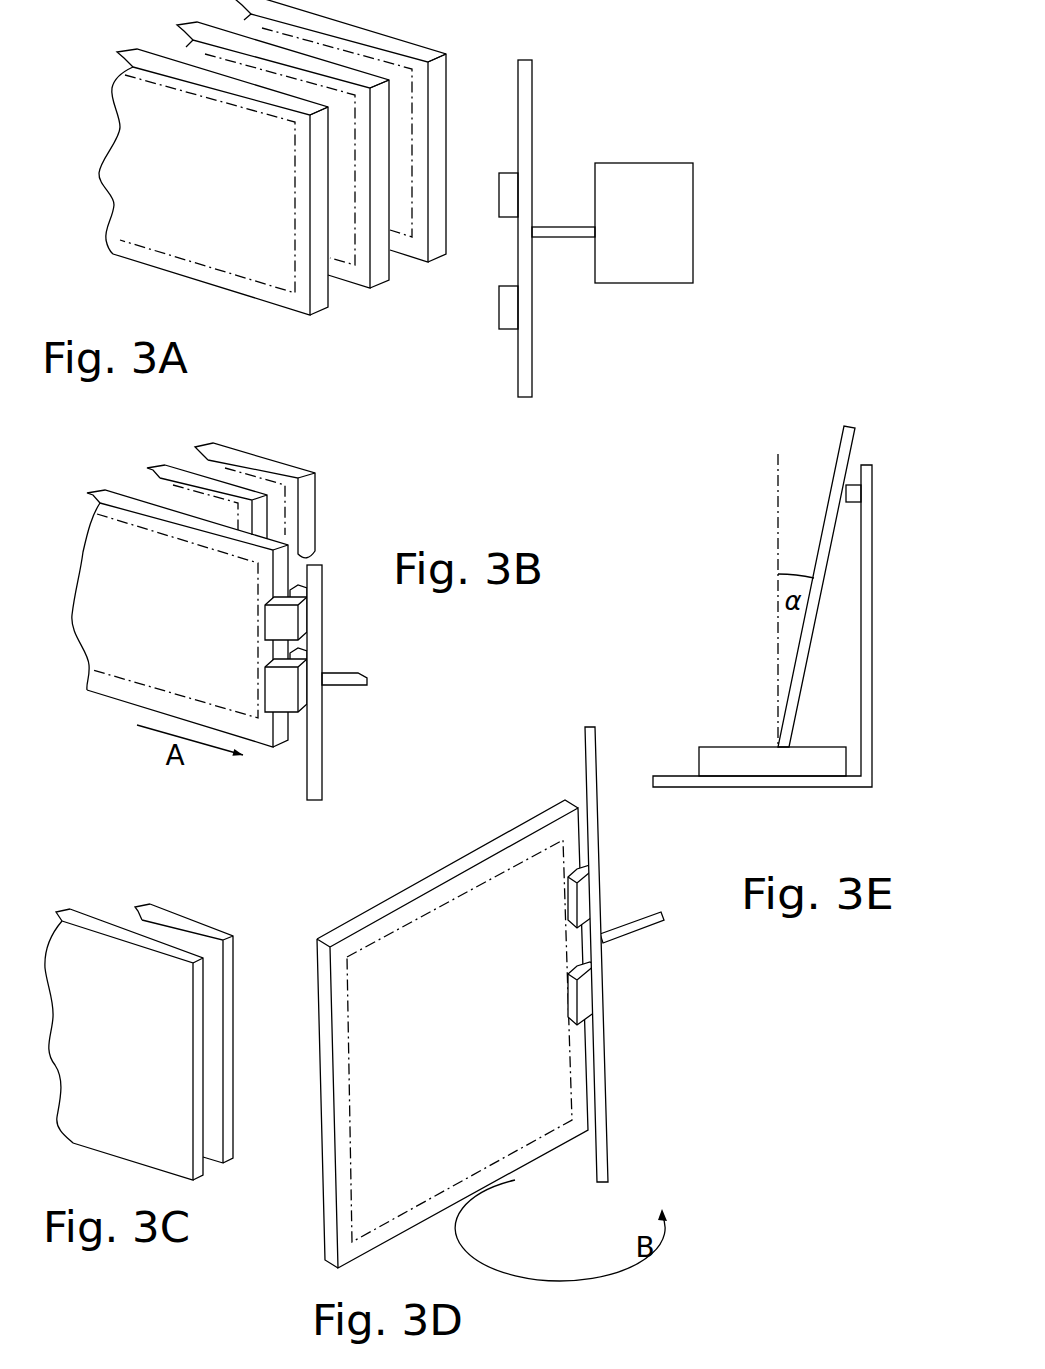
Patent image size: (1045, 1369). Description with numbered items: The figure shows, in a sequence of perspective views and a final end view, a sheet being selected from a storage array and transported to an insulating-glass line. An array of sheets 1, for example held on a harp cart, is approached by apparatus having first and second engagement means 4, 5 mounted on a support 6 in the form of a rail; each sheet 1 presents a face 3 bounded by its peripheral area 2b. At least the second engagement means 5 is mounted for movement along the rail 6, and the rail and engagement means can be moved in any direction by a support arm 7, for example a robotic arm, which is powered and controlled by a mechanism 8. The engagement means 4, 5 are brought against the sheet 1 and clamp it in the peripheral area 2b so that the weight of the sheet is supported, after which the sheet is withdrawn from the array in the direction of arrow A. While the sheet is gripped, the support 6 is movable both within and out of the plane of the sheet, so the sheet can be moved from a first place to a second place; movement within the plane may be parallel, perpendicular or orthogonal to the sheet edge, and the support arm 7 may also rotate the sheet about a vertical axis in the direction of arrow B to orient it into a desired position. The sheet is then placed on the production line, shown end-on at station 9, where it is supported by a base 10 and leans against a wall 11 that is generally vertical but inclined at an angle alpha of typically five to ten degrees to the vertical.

In FIG. 3A, the sheet 1 is at (120, 54).
In FIG. 3B, the sheet 1 is at (220, 473).
In FIG. 3E, the sheet 1 is at (843, 426).
In FIG. 3C, the sheet 1 is at (102, 930).
In FIG. 3D, the sheet 1 is at (367, 917).
In FIG. 3A, the peripheral area 2b is at (434, 92).
In FIG. 3D, the peripheral area 2b is at (342, 1189).
In FIG. 3A, the panel surface 3 is at (266, 160).
In FIG. 3A, the first engagement means 4 is at (506, 305).
In FIG. 3B, the first engagement means 4 is at (296, 710).
In FIG. 3D, the first engagement means 4 is at (590, 992).
In FIG. 3A, the second engagement means 5 is at (509, 205).
In FIG. 3B, the second engagement means 5 is at (288, 634).
In FIG. 3E, the second engagement means 5 is at (853, 493).
In FIG. 3D, the second engagement means 5 is at (586, 887).
In FIG. 3A, the support 6 is at (525, 228).
In FIG. 3B, the support 6 is at (312, 575).
In FIG. 3D, the support 6 is at (588, 757).
In FIG. 3A, the support arm 7 is at (559, 227).
In FIG. 3B, the support arm 7 is at (344, 673).
In FIG. 3D, the support arm 7 is at (636, 931).
In FIG. 3A, the mechanism 8 is at (644, 271).
In FIG. 3E, the holding device 9 is at (881, 643).
In FIG. 3E, the base 10 is at (779, 768).
In FIG. 3E, the wall 11 is at (873, 712).